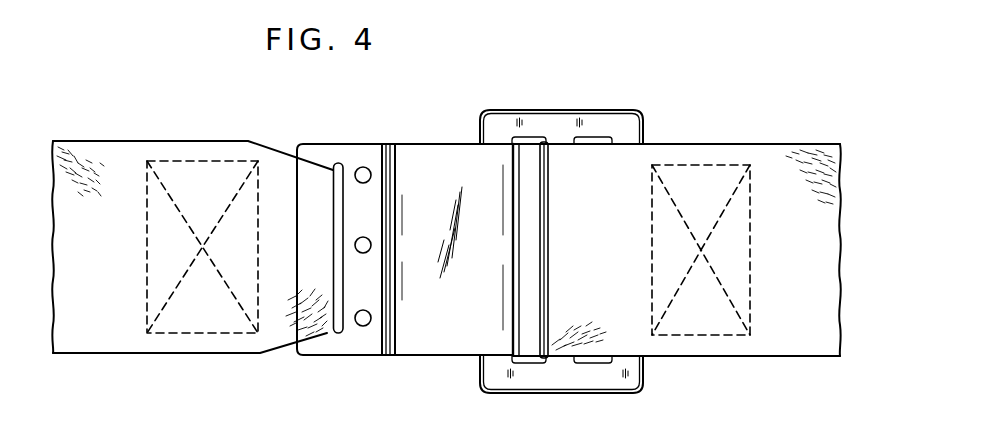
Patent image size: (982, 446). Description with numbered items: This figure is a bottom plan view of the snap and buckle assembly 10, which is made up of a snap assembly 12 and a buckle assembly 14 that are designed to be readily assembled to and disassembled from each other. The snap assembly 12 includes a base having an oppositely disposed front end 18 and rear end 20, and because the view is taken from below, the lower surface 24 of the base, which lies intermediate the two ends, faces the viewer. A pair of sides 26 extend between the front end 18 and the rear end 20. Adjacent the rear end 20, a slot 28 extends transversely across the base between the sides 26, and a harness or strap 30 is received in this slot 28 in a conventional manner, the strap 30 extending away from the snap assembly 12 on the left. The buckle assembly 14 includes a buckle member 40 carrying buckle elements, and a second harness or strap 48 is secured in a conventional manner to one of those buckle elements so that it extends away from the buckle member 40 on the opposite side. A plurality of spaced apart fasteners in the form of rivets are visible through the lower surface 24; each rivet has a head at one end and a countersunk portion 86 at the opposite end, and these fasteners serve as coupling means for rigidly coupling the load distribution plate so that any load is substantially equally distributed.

The snap and buckle assembly 10 is at (492, 237).
The snap assembly 12 is at (412, 143).
The buckle assembly 14 is at (677, 231).
The front end 18 is at (520, 172).
The rear end 20 is at (192, 243).
The lower surface 24 is at (452, 148).
The sides 26 is at (386, 144).
The slot 28 is at (334, 168).
The harness or strap 30 is at (113, 141).
The buckle member 40 is at (643, 380).
The harness or strap 48 is at (758, 358).
The countersunk portion 86 is at (372, 176).